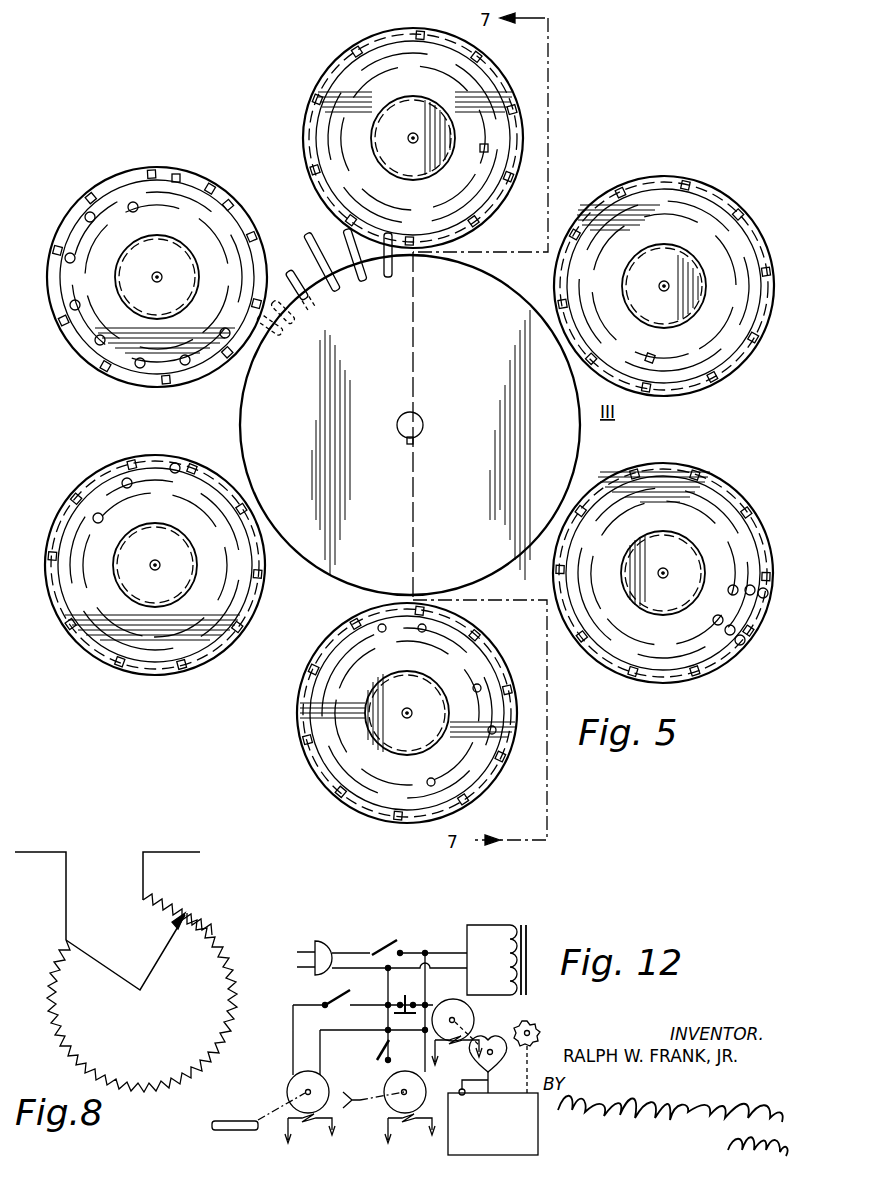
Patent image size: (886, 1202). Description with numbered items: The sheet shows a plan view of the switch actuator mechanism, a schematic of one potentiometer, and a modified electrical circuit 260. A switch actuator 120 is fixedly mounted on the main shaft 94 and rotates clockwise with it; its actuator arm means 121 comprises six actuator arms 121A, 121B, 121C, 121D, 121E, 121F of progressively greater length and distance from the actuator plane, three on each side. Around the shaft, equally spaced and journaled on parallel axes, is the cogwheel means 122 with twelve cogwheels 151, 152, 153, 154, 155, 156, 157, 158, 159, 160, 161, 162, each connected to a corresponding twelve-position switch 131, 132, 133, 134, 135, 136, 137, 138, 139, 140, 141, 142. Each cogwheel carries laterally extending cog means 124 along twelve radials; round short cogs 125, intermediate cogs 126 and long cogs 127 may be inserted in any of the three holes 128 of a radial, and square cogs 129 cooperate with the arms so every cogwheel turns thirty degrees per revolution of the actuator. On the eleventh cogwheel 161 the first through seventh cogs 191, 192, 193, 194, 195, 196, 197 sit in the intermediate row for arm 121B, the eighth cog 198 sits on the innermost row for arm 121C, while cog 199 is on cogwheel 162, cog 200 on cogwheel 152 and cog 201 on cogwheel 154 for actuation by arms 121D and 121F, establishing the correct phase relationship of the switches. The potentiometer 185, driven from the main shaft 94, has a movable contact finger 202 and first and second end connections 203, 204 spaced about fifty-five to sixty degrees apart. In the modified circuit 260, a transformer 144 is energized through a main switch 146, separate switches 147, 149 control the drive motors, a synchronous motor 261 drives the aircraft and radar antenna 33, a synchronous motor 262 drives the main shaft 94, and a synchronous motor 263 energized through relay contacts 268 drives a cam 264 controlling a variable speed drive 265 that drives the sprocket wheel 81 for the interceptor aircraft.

In FIG. 5, the switch actuator 120 is at (505, 300).
In FIG. 5, the main shaft 94 is at (416, 415).
In FIG. 12, the main shaft 94 is at (232, 1120).
In FIG. 5, the actuator arm means 121 is at (357, 305).
In FIG. 5, the actuator arm 121A is at (392, 277).
In FIG. 5, the actuator arm 121B is at (364, 282).
In FIG. 5, the actuator arm 121C is at (338, 292).
In FIG. 5, the actuator arm 121D is at (305, 300).
In FIG. 5, the actuator arm 121E is at (292, 325).
In FIG. 5, the actuator arm 121F is at (268, 335).
In FIG. 5, the first cogwheel 151 is at (487, 75).
In FIG. 5, the second cogwheel 152 is at (468, 55).
In FIG. 5, the switch 131 is at (437, 96).
In FIG. 5, the switch 132 is at (392, 168).
In FIG. 5, the cog 200 is at (488, 148).
In FIG. 5, the cogwheel means 122 is at (312, 104).
In FIG. 5, the twelfth cogwheel 162 is at (163, 175).
In FIG. 5, the cog 199 is at (180, 174).
In FIG. 5, the square cog 129 is at (232, 206).
In FIG. 5, the switch 141 is at (170, 240).
In FIG. 5, the switch 142 is at (190, 245).
In FIG. 5, the eleventh cogwheel 161 is at (72, 330).
In FIG. 5, the eighth cog 198 is at (130, 203).
In FIG. 5, the seventh cog 197 is at (88, 213).
In FIG. 5, the sixth cog 196 is at (66, 256).
In FIG. 5, the fifth cog 195 is at (70, 305).
In FIG. 5, the fourth cog 194 is at (97, 345).
In FIG. 5, the third cog 193 is at (138, 368).
In FIG. 5, the second cog 192 is at (185, 365).
In FIG. 5, the first cog 191 is at (224, 338).
In FIG. 5, the cog means 124 is at (220, 480).
In FIG. 5, the third cogwheel 153 is at (736, 376).
In FIG. 5, the fourth cogwheel 154 is at (714, 388).
In FIG. 5, the switch 133 is at (682, 248).
In FIG. 5, the switch 134 is at (630, 305).
In FIG. 5, the cog 201 is at (652, 362).
In FIG. 5, the ninth cogwheel 159 is at (162, 666).
In FIG. 5, the tenth cogwheel 160 is at (228, 655).
In FIG. 5, the switch 139 is at (186, 532).
In FIG. 5, the switch 140 is at (196, 552).
In FIG. 5, the short cog 125 is at (172, 465).
In FIG. 5, the intermediate length cog 126 is at (122, 482).
In FIG. 5, the long cog 127 is at (93, 516).
In FIG. 5, the fifth cogwheel 155 is at (720, 665).
In FIG. 5, the sixth cogwheel 156 is at (681, 680).
In FIG. 5, the switch 135 is at (664, 536).
In FIG. 5, the switch 136 is at (648, 610).
In FIG. 5, the holes 128 is at (745, 640).
In FIG. 5, the seventh cogwheel 157 is at (308, 757).
In FIG. 5, the eighth cogwheel 158 is at (345, 807).
In FIG. 5, the switch 137 is at (405, 680).
In FIG. 5, the switch 138 is at (392, 752).
In FIG. 8, the first potentiometer 185 is at (212, 928).
In FIG. 8, the movable contact finger 202 is at (153, 967).
In FIG. 8, the second end connection 204 is at (66, 938).
In FIG. 8, the first end connection 203 is at (145, 898).
In FIG. 12, the modified electrical circuit 260 is at (380, 998).
In FIG. 12, the main switch 146 is at (388, 940).
In FIG. 12, the transformer 144 is at (528, 906).
In FIG. 12, the switch 149 is at (330, 1000).
In FIG. 12, the relay contacts 268 is at (398, 1015).
In FIG. 12, the switch 147 is at (380, 1055).
In FIG. 12, the synchronous motor 263 is at (462, 988).
In FIG. 12, the cam 264 is at (500, 1040).
In FIG. 12, the sprocket wheel 81 is at (531, 1024).
In FIG. 12, the variable speed drive 265 is at (492, 1112).
In FIG. 12, the synchronous motor 262 is at (295, 1085).
In FIG. 12, the synchronous motor 261 is at (385, 1090).
In FIG. 12, the radar antenna 33 is at (352, 1104).